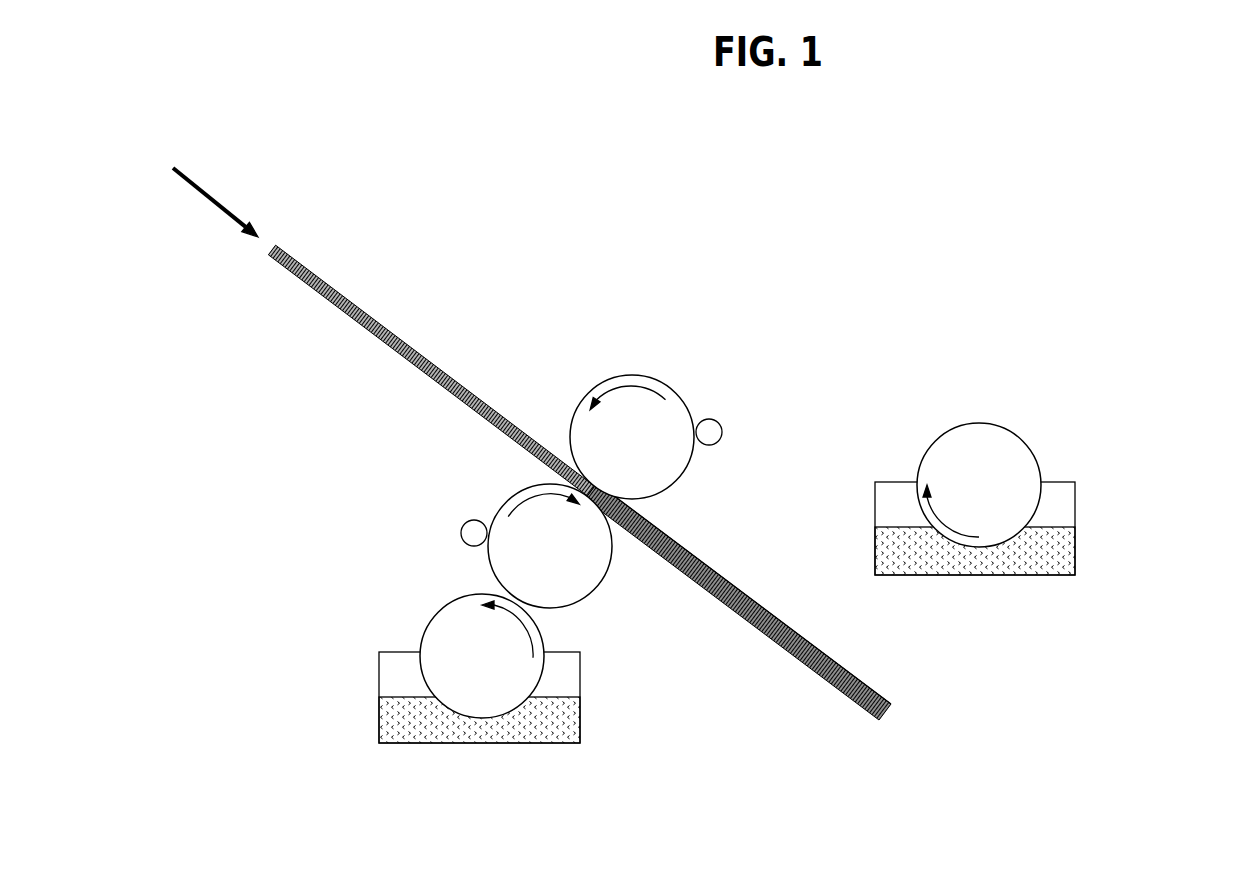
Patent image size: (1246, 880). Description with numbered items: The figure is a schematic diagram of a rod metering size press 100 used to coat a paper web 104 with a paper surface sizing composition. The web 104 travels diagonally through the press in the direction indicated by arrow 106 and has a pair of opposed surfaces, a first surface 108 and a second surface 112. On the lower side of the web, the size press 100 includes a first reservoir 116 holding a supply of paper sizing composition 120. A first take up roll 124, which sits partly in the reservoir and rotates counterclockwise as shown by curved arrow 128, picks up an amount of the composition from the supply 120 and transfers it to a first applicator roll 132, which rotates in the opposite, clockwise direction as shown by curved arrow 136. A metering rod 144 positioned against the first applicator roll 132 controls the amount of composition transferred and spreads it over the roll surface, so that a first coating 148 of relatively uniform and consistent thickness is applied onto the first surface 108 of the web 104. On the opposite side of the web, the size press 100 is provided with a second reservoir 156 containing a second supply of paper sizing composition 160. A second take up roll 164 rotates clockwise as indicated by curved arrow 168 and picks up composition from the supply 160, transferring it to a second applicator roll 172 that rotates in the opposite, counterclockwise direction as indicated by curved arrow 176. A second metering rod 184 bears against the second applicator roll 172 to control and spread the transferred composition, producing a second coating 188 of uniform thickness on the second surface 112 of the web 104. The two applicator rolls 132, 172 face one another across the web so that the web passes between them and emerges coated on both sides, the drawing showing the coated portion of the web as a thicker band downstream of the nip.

The rod metering size press 100 is at (574, 222).
The paper web 104 is at (602, 308).
The arrow 106 is at (223, 205).
The first surface 108 is at (342, 312).
The second surface 112 is at (390, 323).
The first reservoir 116 is at (363, 685).
The paper sizing composition supply 120 is at (558, 769).
The first take up roll 124 is at (403, 601).
The curved arrow 128 is at (527, 627).
The first applicator roll 132 is at (458, 491).
The curved arrow 136 is at (513, 505).
The metering rod 144 is at (446, 517).
The first coating 148 is at (715, 603).
The second reservoir 156 is at (1120, 605).
The second paper sizing composition supply 160 is at (1005, 593).
The second take up roll 164 is at (1063, 433).
The curved arrow 168 is at (952, 530).
The second applicator roll 172 is at (708, 381).
The curved arrow 176 is at (633, 390).
The second metering rod 184 is at (739, 423).
The second coating 188 is at (760, 603).